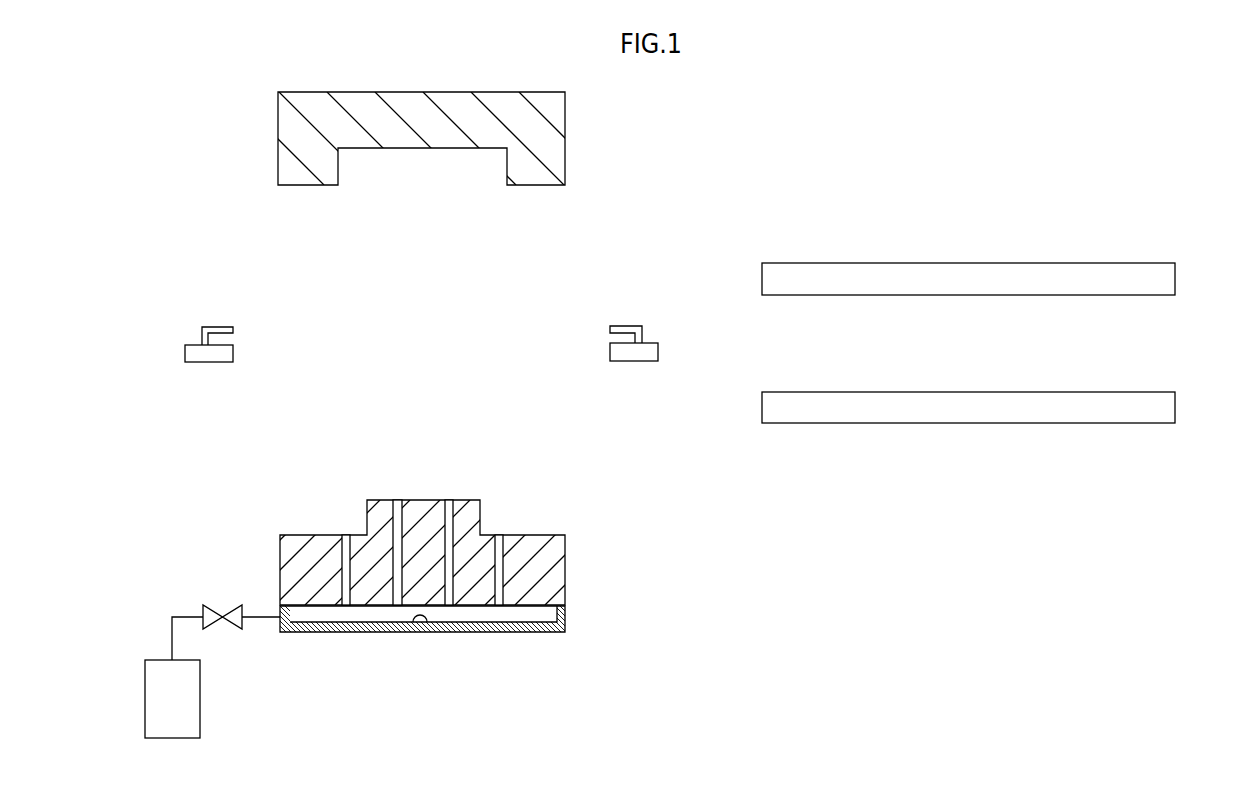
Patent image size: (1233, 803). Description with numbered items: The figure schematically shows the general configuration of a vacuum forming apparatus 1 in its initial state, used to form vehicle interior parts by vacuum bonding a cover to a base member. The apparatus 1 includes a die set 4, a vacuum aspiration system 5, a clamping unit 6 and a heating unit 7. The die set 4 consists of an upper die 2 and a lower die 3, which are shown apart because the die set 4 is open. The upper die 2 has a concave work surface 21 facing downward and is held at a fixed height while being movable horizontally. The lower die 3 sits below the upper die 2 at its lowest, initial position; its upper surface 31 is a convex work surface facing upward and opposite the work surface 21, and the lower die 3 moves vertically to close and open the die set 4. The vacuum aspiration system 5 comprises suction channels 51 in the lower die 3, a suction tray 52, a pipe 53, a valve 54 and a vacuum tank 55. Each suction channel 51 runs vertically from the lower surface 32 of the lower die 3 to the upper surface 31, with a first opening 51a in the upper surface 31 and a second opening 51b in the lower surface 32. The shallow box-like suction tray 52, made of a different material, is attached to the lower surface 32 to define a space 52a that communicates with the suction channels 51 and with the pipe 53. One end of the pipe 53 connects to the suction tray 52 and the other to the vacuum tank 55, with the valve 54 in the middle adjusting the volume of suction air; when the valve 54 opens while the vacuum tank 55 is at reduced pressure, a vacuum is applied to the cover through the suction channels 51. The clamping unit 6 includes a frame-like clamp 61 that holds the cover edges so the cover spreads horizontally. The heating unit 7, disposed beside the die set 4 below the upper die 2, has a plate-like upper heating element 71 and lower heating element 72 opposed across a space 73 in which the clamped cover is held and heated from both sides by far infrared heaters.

The vacuum forming apparatus 1 is at (748, 544).
The upper die 2 is at (553, 112).
The work surface 21 is at (401, 149).
The lower die 3 is at (432, 551).
The upper surface 31 is at (418, 500).
The lower surface 32 is at (537, 612).
The die set 4 is at (412, 152).
The vacuum aspiration system 5 is at (215, 591).
The suction channel 51 is at (346, 572).
The first opening 51a is at (391, 520).
The second opening 51b is at (345, 607).
The suction tray 52 is at (418, 653).
The space 52a is at (421, 630).
The pipe 53 is at (260, 620).
The valve 54 is at (225, 607).
The vacuum tank 55 is at (145, 682).
The clamping unit 6 is at (179, 369).
The clamp 61 is at (209, 357).
The heating unit 7 is at (1119, 434).
The upper heating element 71 is at (1165, 277).
The lower heating element 72 is at (1165, 407).
The space 73 is at (1140, 352).